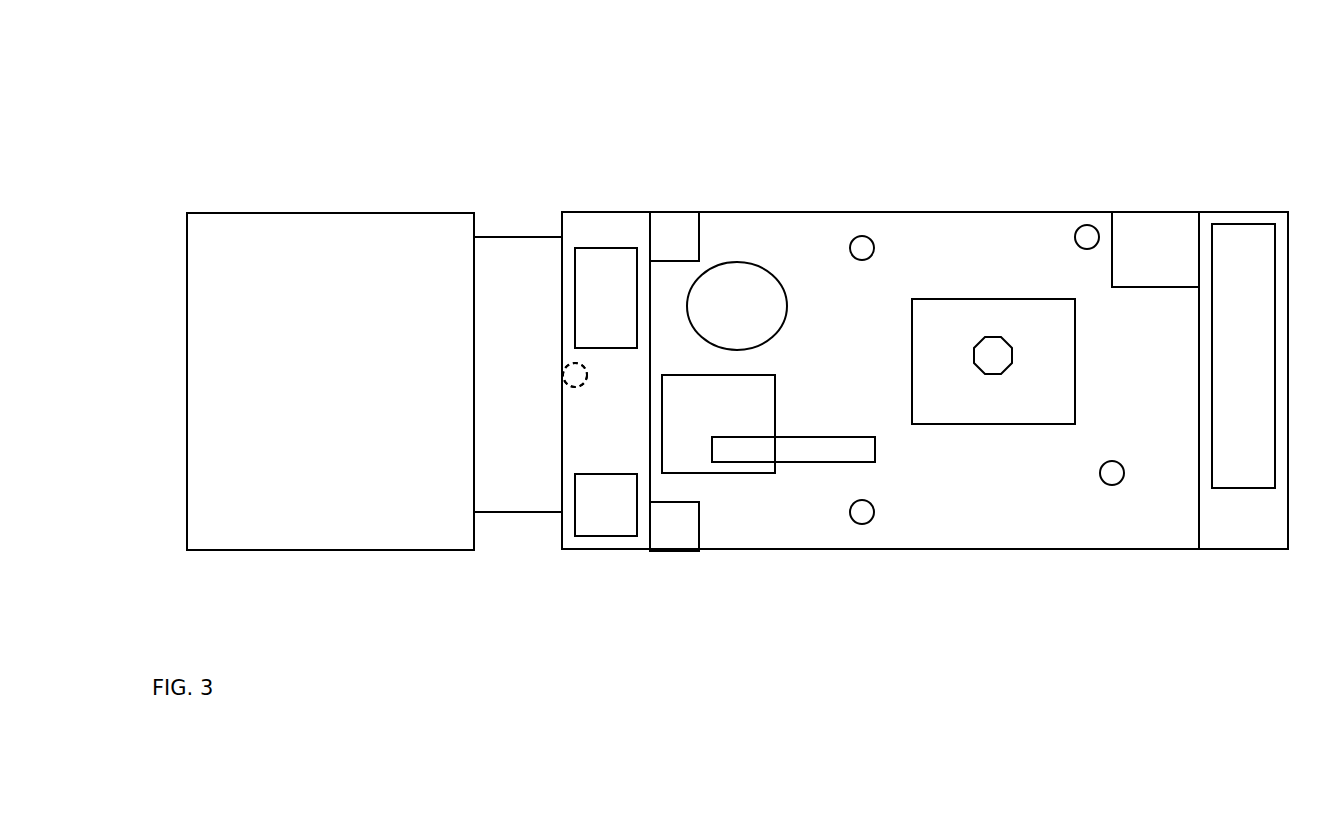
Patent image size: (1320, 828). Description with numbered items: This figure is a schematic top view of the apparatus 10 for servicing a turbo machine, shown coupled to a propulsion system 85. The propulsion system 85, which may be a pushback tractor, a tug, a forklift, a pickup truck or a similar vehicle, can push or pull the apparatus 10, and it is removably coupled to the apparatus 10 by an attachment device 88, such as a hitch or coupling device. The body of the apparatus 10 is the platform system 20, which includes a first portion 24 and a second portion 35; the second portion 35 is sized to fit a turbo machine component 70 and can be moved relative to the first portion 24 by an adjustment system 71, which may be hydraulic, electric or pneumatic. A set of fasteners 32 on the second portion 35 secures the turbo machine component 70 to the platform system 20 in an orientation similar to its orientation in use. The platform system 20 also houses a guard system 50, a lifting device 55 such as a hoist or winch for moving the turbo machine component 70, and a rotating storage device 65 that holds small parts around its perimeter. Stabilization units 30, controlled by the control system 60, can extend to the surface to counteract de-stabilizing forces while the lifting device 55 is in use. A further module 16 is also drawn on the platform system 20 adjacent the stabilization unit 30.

The apparatus 10 is at (604, 104).
The component module 16 is at (606, 505).
The platform system 20 is at (843, 444).
The first portion 24 is at (617, 549).
The stabilization unit 30 is at (674, 381).
The set of fasteners 32 is at (855, 238).
The second portion 35 is at (944, 549).
The guard system 50 is at (1243, 356).
The lifting device 55 is at (768, 424).
The control system 60 is at (606, 298).
The rotating storage device 65 is at (737, 306).
The turbo machine component 70 is at (993, 299).
The adjustment system 71 is at (1155, 249).
The propulsion system 85 is at (374, 381).
The attachment device 88 is at (562, 374).